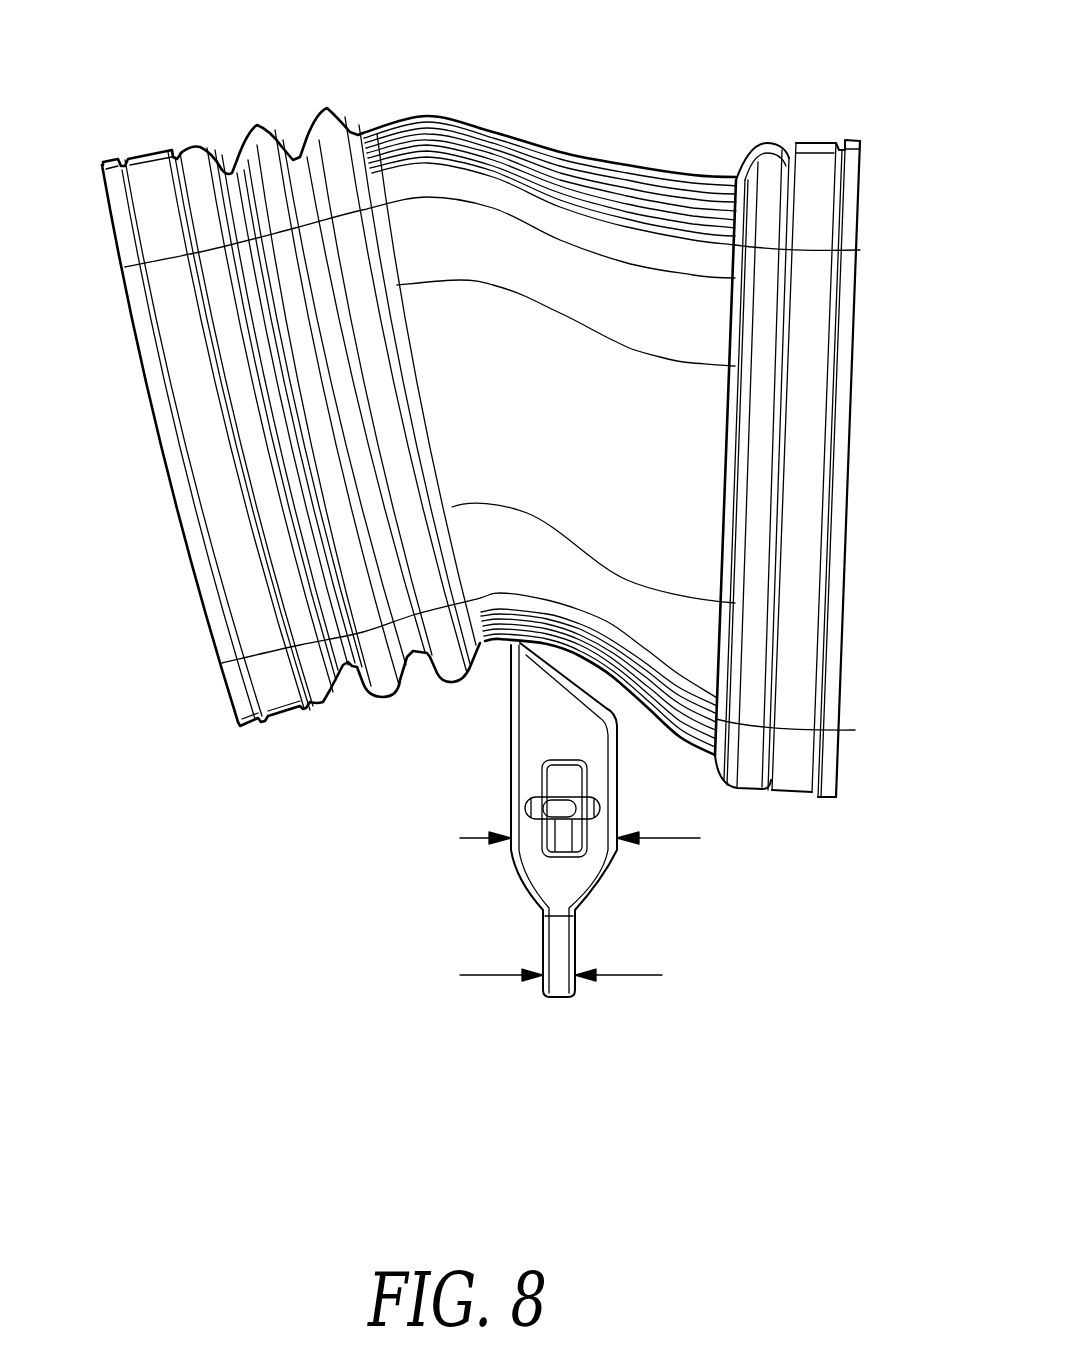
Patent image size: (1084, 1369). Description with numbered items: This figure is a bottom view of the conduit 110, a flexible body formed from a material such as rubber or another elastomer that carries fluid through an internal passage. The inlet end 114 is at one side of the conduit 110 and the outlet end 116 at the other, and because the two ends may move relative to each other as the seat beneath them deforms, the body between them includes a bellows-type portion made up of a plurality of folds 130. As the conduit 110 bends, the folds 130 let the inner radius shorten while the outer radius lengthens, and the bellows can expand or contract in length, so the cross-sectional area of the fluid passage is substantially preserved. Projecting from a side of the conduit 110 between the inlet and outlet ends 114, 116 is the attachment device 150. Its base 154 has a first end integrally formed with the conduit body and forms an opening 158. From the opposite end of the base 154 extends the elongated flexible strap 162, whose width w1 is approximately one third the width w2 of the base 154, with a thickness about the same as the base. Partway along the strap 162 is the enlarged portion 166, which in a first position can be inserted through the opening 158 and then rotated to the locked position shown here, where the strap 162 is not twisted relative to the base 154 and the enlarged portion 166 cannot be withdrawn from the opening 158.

The conduit 110 is at (598, 124).
The inlet end 114 is at (163, 128).
The outlet end 116 is at (816, 104).
The folds 130 is at (282, 100).
The attachment device 150 is at (462, 730).
The base 154 is at (525, 806).
The opening 158 is at (587, 783).
The strap 162 is at (576, 947).
The enlarged portion 166 is at (600, 806).